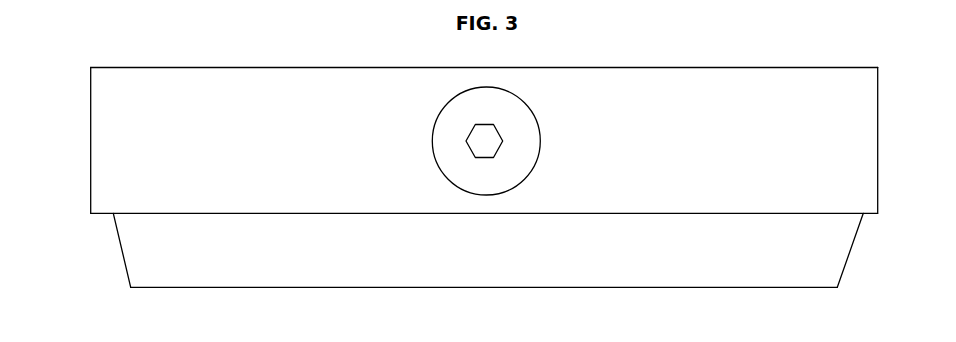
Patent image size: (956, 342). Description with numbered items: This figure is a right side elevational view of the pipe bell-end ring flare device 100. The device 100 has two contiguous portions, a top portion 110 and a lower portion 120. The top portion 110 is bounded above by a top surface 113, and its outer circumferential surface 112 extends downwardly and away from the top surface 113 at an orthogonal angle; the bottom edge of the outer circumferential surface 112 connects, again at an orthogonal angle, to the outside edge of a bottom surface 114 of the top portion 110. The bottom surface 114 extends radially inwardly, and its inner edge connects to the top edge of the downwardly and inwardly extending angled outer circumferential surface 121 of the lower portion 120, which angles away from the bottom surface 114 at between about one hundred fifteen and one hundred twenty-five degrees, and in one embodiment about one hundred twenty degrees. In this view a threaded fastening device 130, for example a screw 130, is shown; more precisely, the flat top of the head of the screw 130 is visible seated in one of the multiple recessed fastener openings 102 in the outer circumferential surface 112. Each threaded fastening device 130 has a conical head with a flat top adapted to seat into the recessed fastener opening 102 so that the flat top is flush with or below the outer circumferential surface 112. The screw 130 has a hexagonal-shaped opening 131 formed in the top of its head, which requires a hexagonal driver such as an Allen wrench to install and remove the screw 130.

The pipe bell-end ring flare device 100 is at (160, 44).
The recessed fastener opening 102 is at (431, 106).
The top portion 110 is at (74, 94).
The outer circumferential surface 112 is at (125, 155).
The top surface 113 is at (803, 67).
The bottom surface 114 is at (865, 215).
The lower portion 120 is at (104, 255).
The downwardly and inwardly extending angled outer circumferential surface 121 is at (203, 253).
The threaded fastening device 130 is at (498, 109).
The hexagonal-shaped opening 131 is at (486, 142).